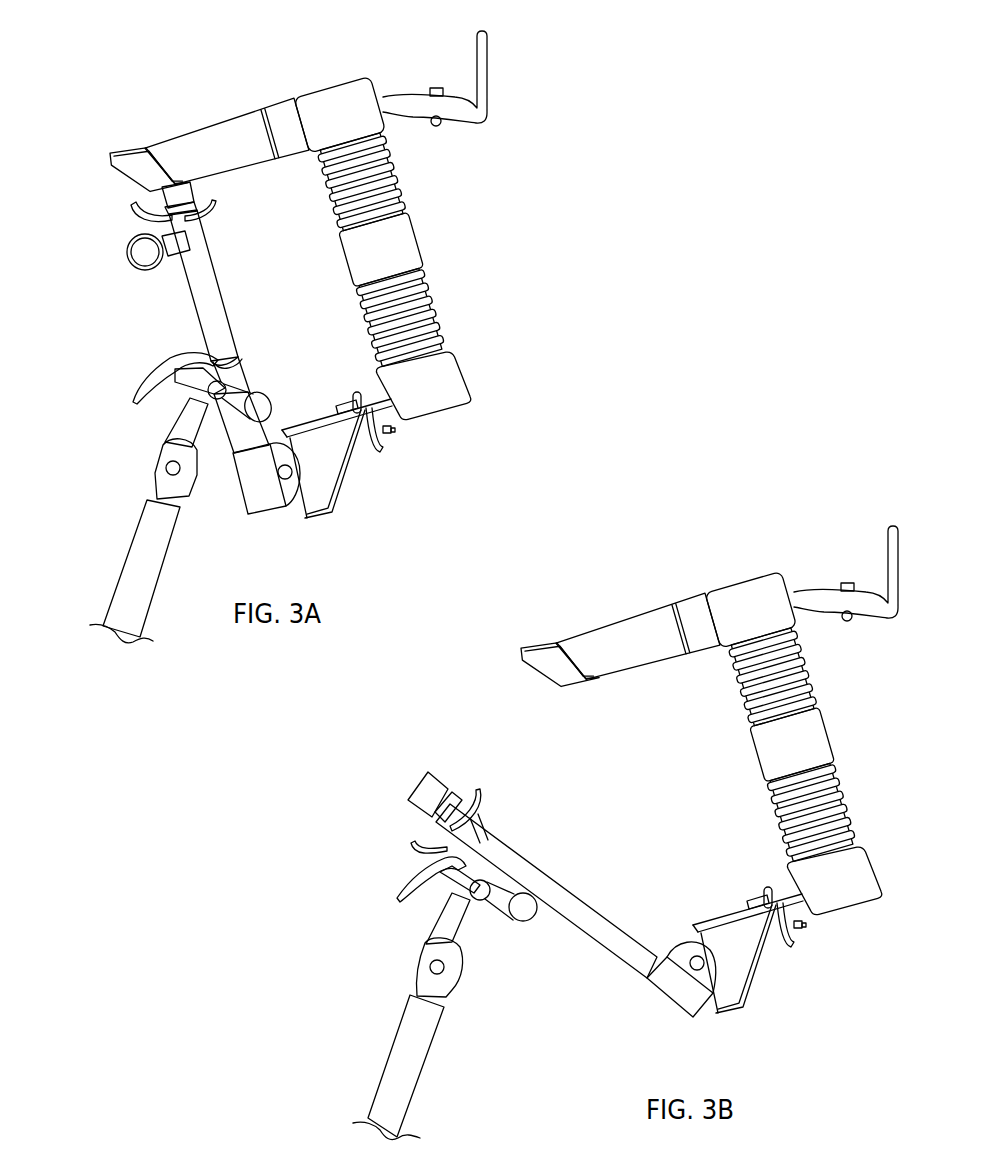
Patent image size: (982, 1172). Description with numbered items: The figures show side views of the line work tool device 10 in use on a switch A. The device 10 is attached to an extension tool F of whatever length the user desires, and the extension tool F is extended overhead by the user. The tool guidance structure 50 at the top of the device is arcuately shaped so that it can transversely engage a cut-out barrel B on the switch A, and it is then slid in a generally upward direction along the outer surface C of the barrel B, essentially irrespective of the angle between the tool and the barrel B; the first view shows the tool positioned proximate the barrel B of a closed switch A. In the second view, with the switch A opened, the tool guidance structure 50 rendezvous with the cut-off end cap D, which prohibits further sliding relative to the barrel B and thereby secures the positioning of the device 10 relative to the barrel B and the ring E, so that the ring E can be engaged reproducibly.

In FIG. 3A, the switch A is at (238, 428).
In FIG. 3A, the cut-out barrel B is at (233, 341).
In FIG. 3A, the outer surface C is at (200, 328).
In FIG. 3A, the cut-off end cap D is at (196, 232).
In FIG. 3A, the ring E is at (125, 255).
In FIG. 3A, the extension tool F is at (142, 549).
In FIG. 3A, the tool guidance structure 50 is at (233, 350).
In FIG. 3B, the line work tool device 10 is at (408, 918).